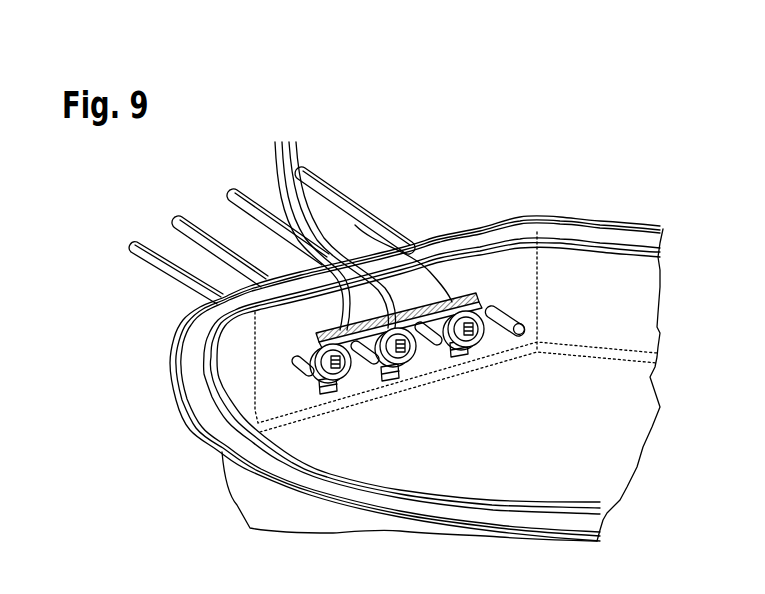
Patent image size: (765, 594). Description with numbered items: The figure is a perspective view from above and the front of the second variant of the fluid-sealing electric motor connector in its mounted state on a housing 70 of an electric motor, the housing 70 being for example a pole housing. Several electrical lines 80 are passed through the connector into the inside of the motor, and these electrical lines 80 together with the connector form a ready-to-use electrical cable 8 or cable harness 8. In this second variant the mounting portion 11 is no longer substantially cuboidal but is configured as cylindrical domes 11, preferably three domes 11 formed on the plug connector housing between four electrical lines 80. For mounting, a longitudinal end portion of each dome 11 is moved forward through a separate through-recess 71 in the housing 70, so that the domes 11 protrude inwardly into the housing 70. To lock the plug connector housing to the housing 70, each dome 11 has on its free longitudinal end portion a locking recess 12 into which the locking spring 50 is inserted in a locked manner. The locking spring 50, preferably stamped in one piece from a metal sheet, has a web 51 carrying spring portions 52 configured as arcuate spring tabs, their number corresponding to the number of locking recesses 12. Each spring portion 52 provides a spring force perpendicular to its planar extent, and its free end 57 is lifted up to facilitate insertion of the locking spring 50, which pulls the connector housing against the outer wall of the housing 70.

The electrical cable 8 is at (358, 171).
The mounting portion 11 is at (303, 338).
The locking recess 12 is at (360, 220).
The locking spring 50 is at (450, 253).
The web 51 is at (472, 290).
The spring portion 52 is at (345, 381).
The free end 57 is at (325, 392).
The housing 70 is at (600, 454).
The through-recess 71 is at (313, 347).
The electrical line 80 is at (238, 190).